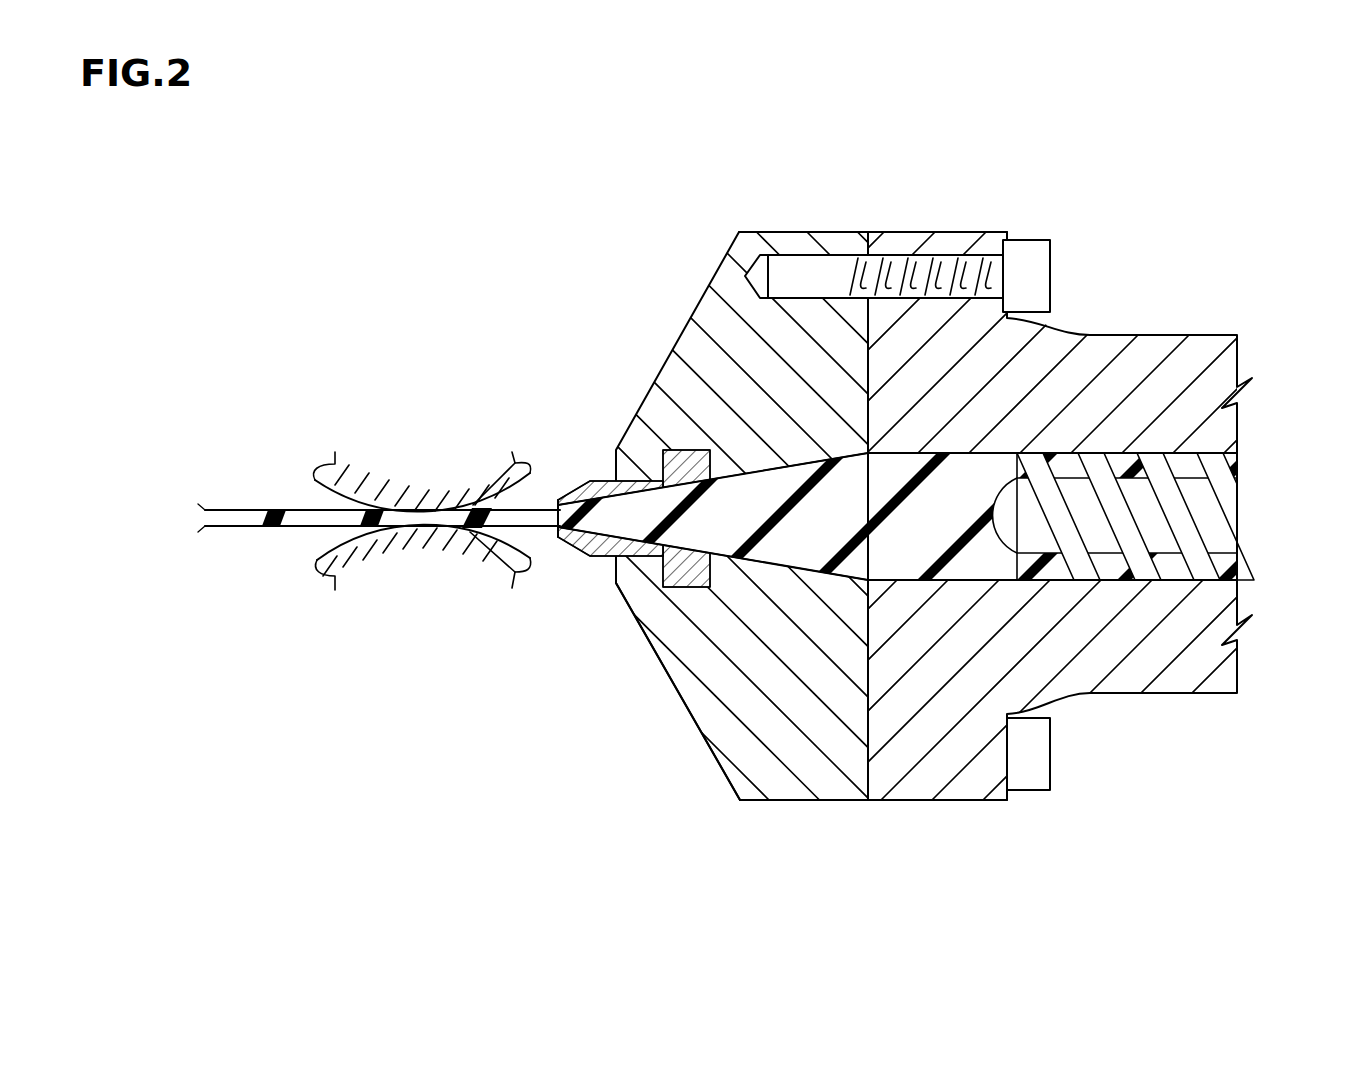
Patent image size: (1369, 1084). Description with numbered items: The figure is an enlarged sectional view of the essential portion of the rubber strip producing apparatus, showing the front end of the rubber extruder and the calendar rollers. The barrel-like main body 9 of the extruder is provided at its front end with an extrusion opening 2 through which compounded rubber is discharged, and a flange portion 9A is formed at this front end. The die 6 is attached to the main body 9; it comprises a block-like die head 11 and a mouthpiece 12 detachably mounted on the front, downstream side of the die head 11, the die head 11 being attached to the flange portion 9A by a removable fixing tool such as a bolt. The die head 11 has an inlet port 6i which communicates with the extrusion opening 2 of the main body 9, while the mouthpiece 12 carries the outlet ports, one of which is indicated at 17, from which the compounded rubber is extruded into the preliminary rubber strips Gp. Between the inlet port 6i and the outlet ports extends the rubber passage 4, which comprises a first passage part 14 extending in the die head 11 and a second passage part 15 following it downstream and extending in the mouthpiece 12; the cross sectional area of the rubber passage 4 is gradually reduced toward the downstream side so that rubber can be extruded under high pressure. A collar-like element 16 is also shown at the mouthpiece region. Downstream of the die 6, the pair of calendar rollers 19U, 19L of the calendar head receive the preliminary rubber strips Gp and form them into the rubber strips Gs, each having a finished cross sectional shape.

The extrusion opening 2 is at (868, 553).
The rubber passage 4 is at (808, 895).
The die 6 is at (675, 187).
The inlet port 6i is at (868, 492).
The main body 9 is at (1180, 377).
The flange portion 9A is at (957, 243).
The die head 11 is at (703, 358).
The mouthpiece 12 is at (583, 478).
The first passage part 14 is at (778, 540).
The second passage part 15 is at (690, 527).
The collar 16 is at (645, 490).
The discharge opening 17 is at (549, 545).
The calendar roller 19U is at (303, 465).
The calendar roller 19L is at (300, 548).
The rubber strip Gs is at (232, 512).
The preliminary rubber strip Gp is at (552, 500).